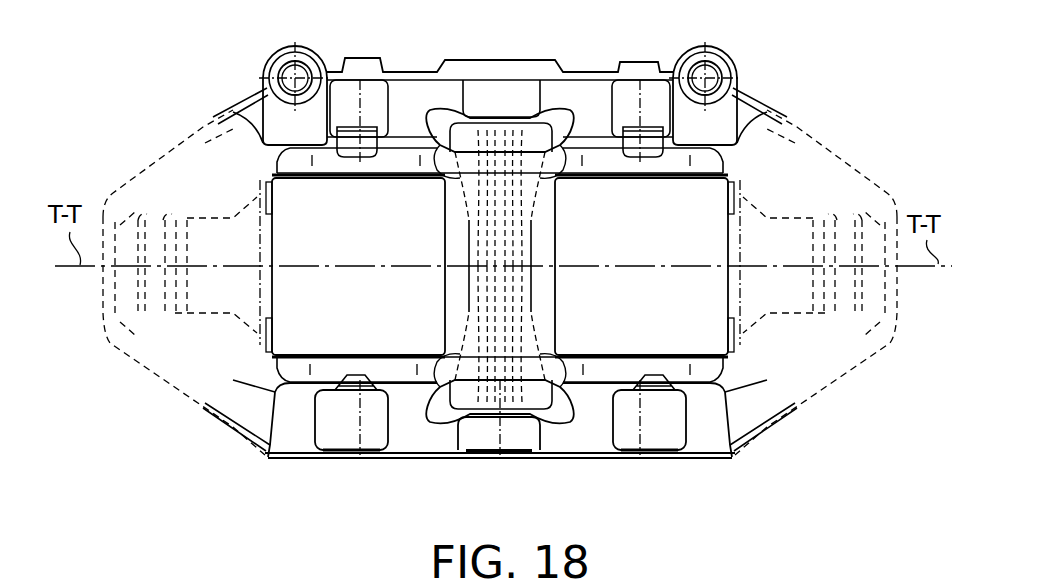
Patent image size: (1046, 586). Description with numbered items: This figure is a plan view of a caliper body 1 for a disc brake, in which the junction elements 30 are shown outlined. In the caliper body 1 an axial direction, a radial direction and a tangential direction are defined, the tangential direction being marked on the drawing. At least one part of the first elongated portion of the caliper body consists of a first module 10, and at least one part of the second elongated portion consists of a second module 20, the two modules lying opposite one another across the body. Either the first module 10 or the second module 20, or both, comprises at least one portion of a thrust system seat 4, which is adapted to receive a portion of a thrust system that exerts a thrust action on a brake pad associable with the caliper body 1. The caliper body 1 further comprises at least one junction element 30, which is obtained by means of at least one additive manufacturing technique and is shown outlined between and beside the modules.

The caliper body 1 is at (513, 443).
The thrust system seat 4 is at (367, 430).
The first module 10 is at (413, 95).
The second module 20 is at (648, 425).
The junction element 30 is at (182, 182).